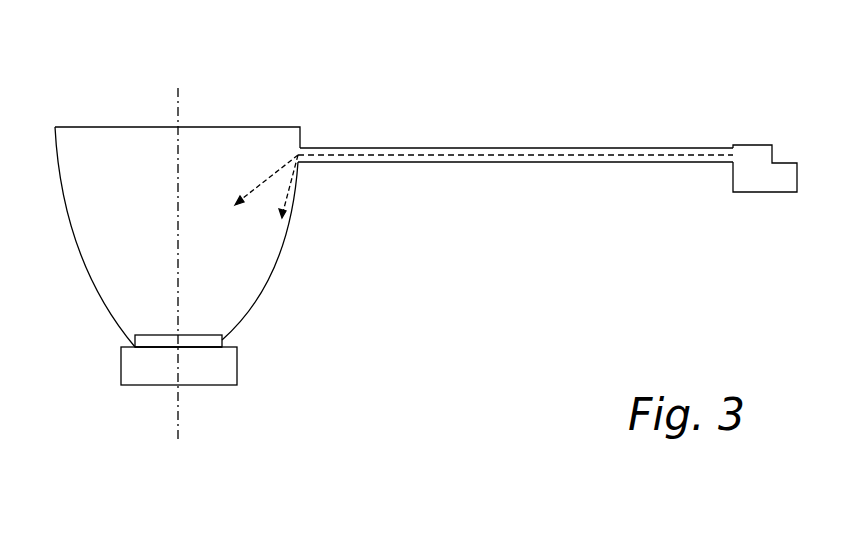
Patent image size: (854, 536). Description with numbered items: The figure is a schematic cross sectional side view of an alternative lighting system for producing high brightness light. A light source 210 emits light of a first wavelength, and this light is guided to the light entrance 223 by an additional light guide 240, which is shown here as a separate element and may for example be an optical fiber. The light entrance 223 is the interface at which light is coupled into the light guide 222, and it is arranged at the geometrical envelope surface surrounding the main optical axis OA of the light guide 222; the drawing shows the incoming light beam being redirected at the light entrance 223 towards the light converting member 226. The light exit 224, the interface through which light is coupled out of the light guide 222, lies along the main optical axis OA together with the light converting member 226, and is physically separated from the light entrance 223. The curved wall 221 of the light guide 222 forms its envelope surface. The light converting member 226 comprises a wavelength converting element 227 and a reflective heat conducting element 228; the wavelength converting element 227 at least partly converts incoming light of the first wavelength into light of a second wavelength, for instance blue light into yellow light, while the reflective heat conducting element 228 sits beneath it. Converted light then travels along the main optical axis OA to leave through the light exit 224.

The light source 210 is at (757, 175).
The right reflector wall 221 is at (280, 258).
The light guide 222 is at (97, 277).
The light entrance 223 is at (298, 162).
The light exit 224 is at (108, 127).
The light converting member 226 is at (225, 343).
The wavelength converting element 227 is at (153, 342).
The reflective heat conducting element 228 is at (207, 373).
The additional light guide 240 is at (497, 163).
The main optical axis OA is at (180, 430).